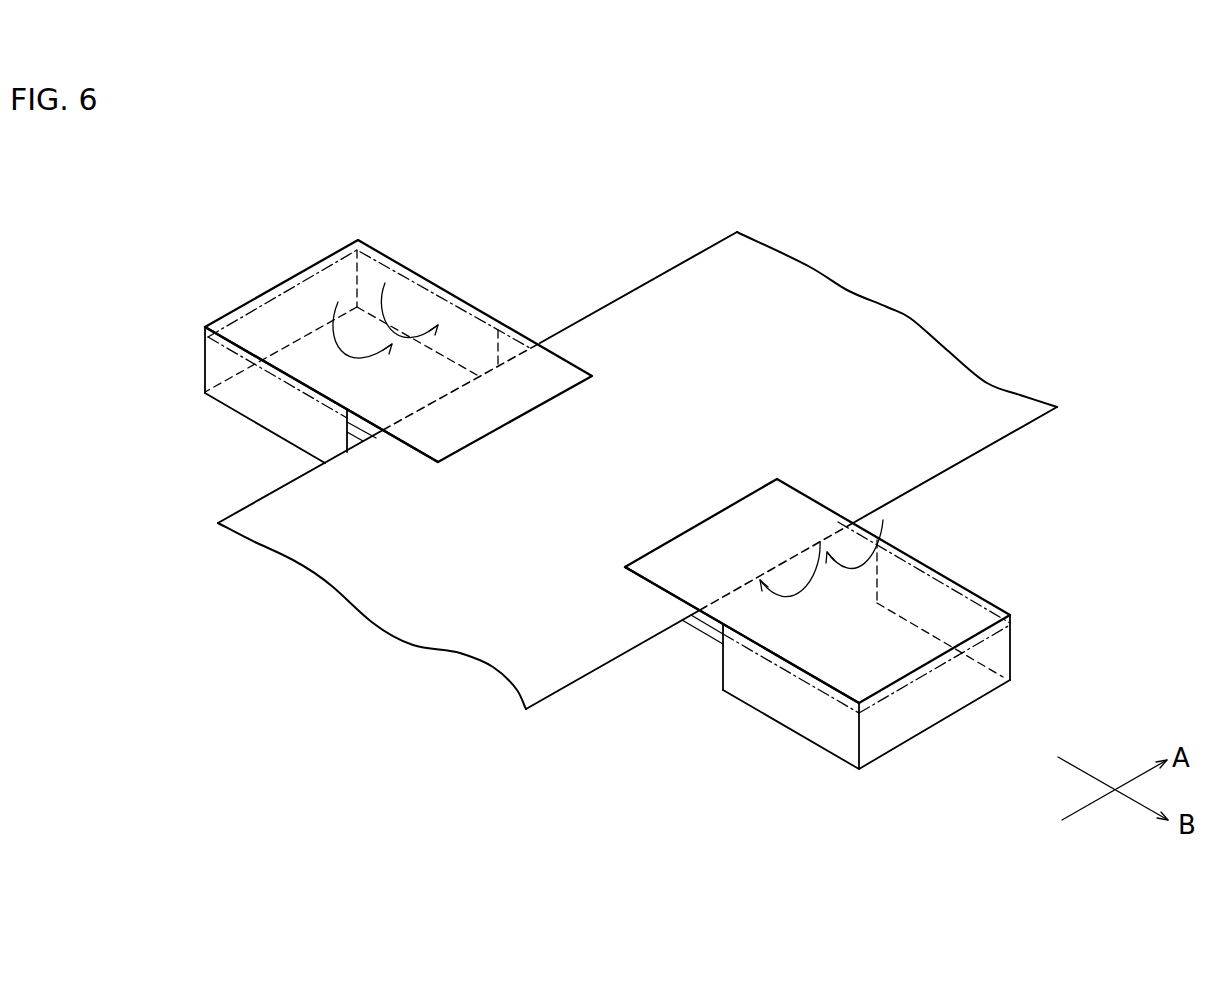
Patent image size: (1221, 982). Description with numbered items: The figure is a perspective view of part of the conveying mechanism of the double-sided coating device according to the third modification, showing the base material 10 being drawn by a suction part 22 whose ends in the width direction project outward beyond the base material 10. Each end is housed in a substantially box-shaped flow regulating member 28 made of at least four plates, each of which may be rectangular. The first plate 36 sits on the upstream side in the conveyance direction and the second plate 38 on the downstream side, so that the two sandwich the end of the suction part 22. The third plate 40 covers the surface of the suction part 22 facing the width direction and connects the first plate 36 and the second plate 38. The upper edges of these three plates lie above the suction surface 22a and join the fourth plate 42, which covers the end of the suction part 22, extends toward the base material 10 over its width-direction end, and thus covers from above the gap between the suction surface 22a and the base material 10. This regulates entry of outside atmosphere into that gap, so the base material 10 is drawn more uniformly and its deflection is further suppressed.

The base material 10 is at (543, 702).
The suction part 22 is at (705, 657).
The suction surface 22a is at (690, 617).
The flow regulating member 28 is at (205, 395).
The first plate 36 is at (250, 402).
The second plate 38 is at (407, 300).
The third plate 40 is at (302, 317).
The fourth plate 42 is at (332, 374).